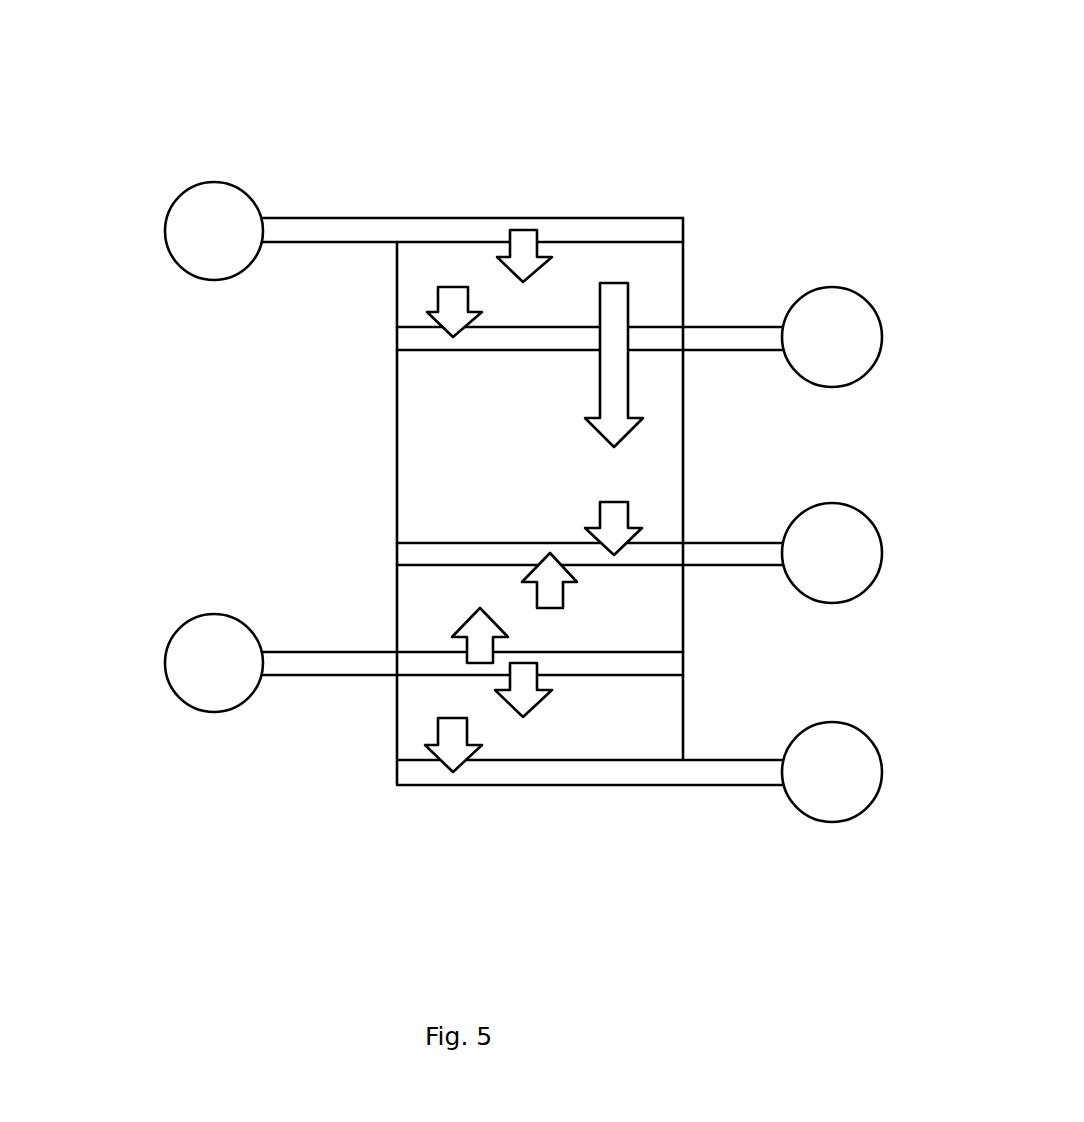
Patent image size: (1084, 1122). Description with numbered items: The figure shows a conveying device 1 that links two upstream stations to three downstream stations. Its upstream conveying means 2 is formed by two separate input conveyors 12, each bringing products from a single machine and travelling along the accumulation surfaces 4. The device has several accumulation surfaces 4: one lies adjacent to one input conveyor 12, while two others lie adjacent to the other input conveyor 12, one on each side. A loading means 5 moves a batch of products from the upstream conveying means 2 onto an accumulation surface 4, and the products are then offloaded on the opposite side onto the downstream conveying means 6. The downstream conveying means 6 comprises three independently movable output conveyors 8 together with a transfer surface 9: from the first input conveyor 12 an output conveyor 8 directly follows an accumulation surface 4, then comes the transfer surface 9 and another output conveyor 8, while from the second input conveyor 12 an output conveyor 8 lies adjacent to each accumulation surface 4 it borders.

The conveying device 1 is at (518, 105).
The upstream conveying means 2 is at (176, 466).
The accumulation surface 4 is at (658, 287).
The loading means 5 is at (515, 262).
The downstream conveying means 6 is at (695, 965).
The output conveyor 8 is at (762, 330).
The transfer surface 9 is at (425, 428).
The input conveyor 12 is at (318, 218).